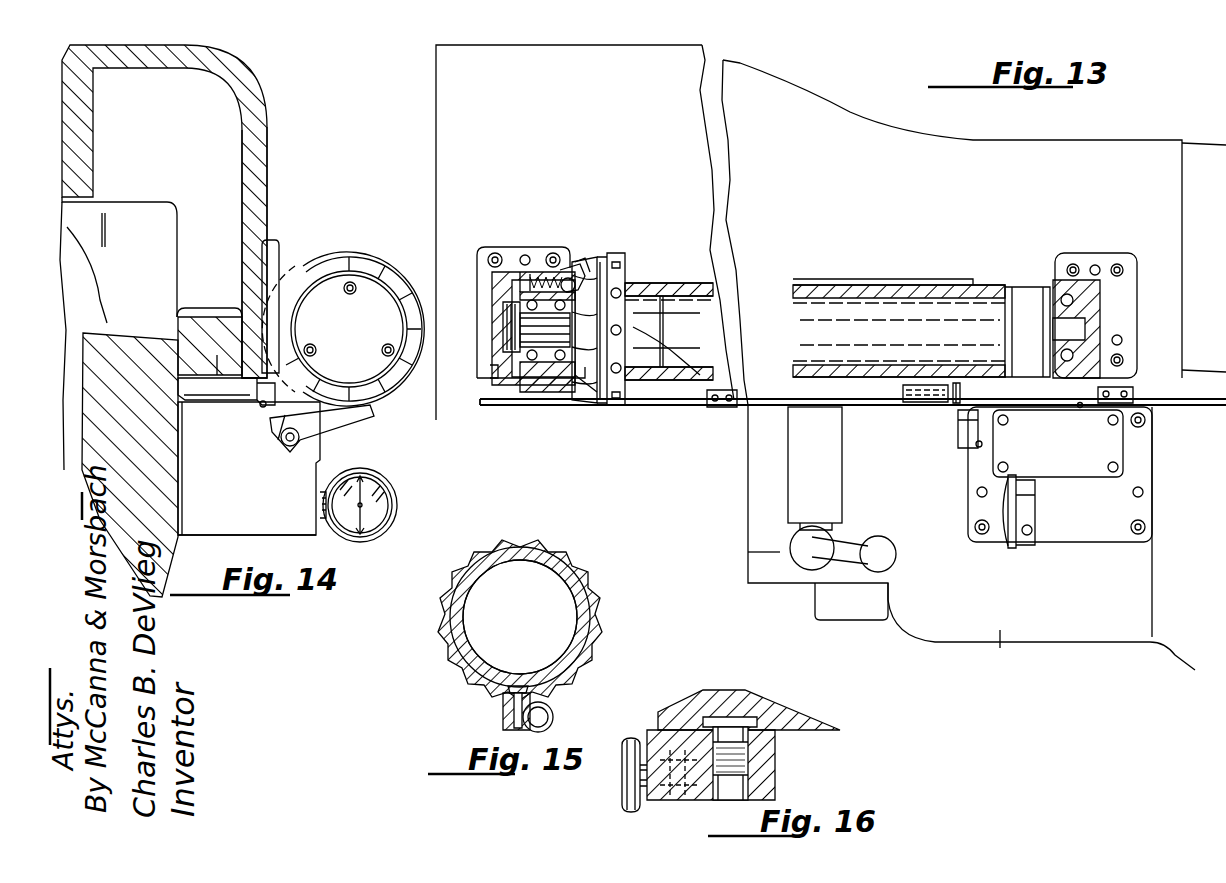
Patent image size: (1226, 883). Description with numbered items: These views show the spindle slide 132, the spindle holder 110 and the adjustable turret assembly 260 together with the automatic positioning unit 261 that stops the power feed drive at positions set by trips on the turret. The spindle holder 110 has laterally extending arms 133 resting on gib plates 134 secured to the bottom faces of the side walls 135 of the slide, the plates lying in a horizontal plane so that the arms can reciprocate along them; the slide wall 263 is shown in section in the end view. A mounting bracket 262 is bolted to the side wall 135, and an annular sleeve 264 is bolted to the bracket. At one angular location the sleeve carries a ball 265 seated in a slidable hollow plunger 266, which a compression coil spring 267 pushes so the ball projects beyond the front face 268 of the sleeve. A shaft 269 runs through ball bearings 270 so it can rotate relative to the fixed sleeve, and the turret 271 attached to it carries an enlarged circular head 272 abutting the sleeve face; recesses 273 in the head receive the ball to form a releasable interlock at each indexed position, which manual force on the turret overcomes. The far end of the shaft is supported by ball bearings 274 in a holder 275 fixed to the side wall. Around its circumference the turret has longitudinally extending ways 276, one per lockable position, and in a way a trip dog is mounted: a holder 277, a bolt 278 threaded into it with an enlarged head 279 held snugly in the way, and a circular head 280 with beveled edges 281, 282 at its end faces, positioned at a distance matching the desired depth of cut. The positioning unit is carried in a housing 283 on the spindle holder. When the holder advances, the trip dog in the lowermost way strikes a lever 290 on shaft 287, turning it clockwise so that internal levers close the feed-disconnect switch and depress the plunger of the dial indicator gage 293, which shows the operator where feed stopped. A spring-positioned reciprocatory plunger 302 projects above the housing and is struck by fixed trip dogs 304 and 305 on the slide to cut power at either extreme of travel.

In FIG. 13, the spindle holder 110 is at (1013, 651).
In FIG. 14, the spindle slide 132 is at (251, 82).
In FIG. 13, the spindle slide 132 is at (1025, 157).
In FIG. 14, the laterally extending arms 133 is at (198, 352).
In FIG. 14, the gib plates 134 is at (190, 385).
In FIG. 14, the side walls 135 is at (258, 278).
In FIG. 13, the turret assembly 260 is at (660, 269).
In FIG. 14, the automatic positioning unit 261 is at (253, 548).
In FIG. 13, the automatic positioning unit 261 is at (1062, 555).
In FIG. 14, the mounting bracket 262 is at (286, 268).
In FIG. 13, the mounting bracket 262 is at (490, 335).
In FIG. 14, the housing wall 263 is at (260, 170).
In FIG. 13, the annular sleeve 264 is at (542, 392).
In FIG. 13, the ball 265 is at (578, 270).
In FIG. 13, the slidable hollow plunger 266 is at (569, 277).
In FIG. 13, the compression coil spring 267 is at (538, 276).
In FIG. 13, the front face 268 is at (578, 392).
In FIG. 13, the shaft 269 is at (510, 358).
In FIG. 13, the ball bearings 270 is at (524, 380).
In FIG. 15, the ball bearings 270 is at (598, 602).
In FIG. 13, the turret 271 is at (668, 372).
In FIG. 14, the circular head 272 is at (368, 262).
In FIG. 13, the circular head 272 is at (603, 400).
In FIG. 13, the recesses 273 is at (586, 272).
In FIG. 13, the ball bearings 274 is at (1062, 297).
In FIG. 13, the holder 275 is at (1082, 282).
In FIG. 15, the ways 276 is at (590, 582).
In FIG. 16, the ways 276 is at (820, 725).
In FIG. 13, the holder 277 is at (918, 398).
In FIG. 16, the holder 277 is at (778, 770).
In FIG. 16, the bolt 278 is at (778, 732).
In FIG. 15, the enlarged head 279 is at (496, 709).
In FIG. 16, the enlarged head 279 is at (738, 720).
In FIG. 16, the circular head 280 is at (630, 738).
In FIG. 13, the beveled edge 281 is at (962, 394).
In FIG. 16, the beveled edge 281 is at (625, 808).
In FIG. 16, the beveled edge 282 is at (645, 812).
In FIG. 14, the housing 283 is at (280, 528).
In FIG. 13, the housing 283 is at (1103, 528).
In FIG. 14, the shaft 287 is at (288, 441).
In FIG. 13, the shaft 287 is at (977, 447).
In FIG. 14, the lever 290 is at (346, 424).
In FIG. 13, the lever 290 is at (958, 428).
In FIG. 14, the dial indicator gage 293 is at (382, 520).
In FIG. 13, the dial indicator gage 293 is at (1004, 545).
In FIG. 14, the reciprocatory plunger 302 is at (258, 412).
In FIG. 13, the reciprocatory plunger 302 is at (1080, 408).
In FIG. 14, the trip dog 304 is at (265, 412).
In FIG. 13, the trip dog 304 is at (722, 408).
In FIG. 13, the trip dog 305 is at (1132, 400).